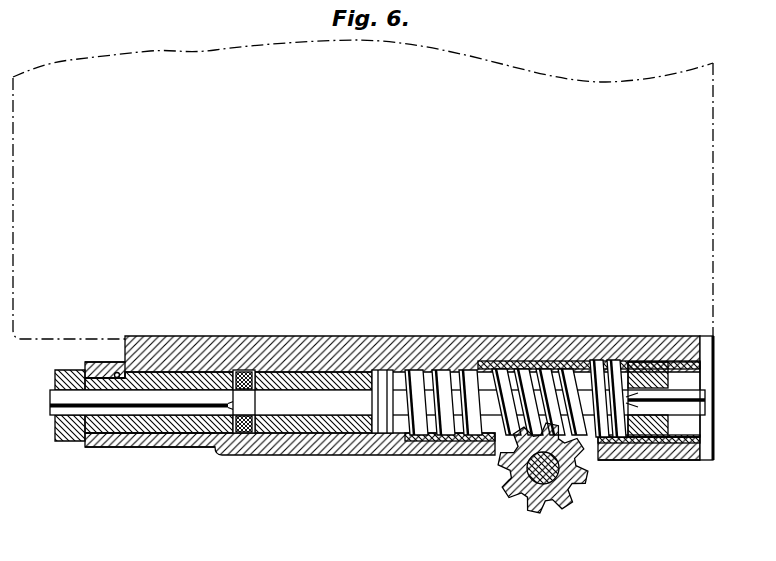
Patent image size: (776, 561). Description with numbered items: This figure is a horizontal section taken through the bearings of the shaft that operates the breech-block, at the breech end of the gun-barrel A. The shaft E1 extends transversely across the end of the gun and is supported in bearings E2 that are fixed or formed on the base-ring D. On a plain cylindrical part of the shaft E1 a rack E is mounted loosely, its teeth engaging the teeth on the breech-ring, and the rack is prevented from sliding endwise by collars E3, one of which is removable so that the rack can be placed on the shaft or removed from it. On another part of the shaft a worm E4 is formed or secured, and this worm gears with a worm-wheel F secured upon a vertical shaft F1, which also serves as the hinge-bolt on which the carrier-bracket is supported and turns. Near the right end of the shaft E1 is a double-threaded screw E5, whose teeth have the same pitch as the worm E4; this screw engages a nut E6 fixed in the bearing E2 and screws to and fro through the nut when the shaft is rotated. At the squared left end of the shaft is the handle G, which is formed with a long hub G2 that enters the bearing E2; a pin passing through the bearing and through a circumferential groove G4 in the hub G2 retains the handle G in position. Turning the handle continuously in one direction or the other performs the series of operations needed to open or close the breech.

The breech end of the gun-barrel A is at (363, 189).
The handle G is at (56, 432).
The long hub G2 is at (158, 433).
The circumferential groove G4 is at (117, 373).
The rack E is at (313, 402).
The shaft E1 is at (377, 400).
The bearings E2 is at (98, 447).
The collars E3 is at (381, 370).
The worm E4 is at (515, 398).
The double-threaded screw E5 is at (598, 461).
The nut E6 is at (672, 428).
The base-ring D is at (247, 370).
The worm-wheel F is at (516, 492).
The vertical shaft F1 is at (543, 468).